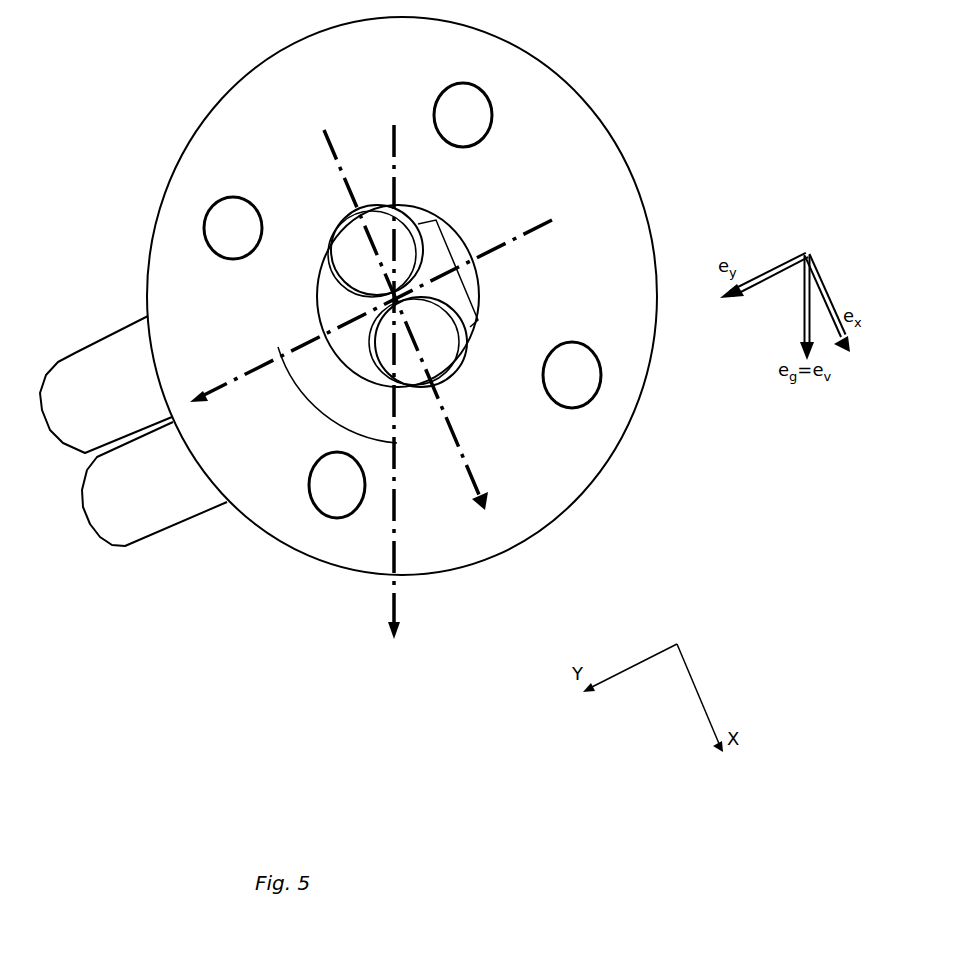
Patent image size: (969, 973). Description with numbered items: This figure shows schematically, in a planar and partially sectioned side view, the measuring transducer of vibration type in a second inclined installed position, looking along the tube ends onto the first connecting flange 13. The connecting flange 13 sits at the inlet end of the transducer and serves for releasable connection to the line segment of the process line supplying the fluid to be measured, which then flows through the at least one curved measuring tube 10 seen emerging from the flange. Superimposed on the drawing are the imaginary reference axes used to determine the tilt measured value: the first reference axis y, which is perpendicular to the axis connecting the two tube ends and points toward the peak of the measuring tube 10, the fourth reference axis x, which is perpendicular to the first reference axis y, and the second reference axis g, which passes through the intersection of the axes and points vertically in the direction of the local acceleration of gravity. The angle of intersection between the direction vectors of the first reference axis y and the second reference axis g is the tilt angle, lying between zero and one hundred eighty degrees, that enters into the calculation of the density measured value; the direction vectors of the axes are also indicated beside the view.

The first connecting flange 13 is at (618, 172).
The measuring tube 10 is at (139, 523).
The second reference axis g is at (406, 384).
The fourth reference axis x is at (411, 320).
The first reference axis y is at (371, 311).